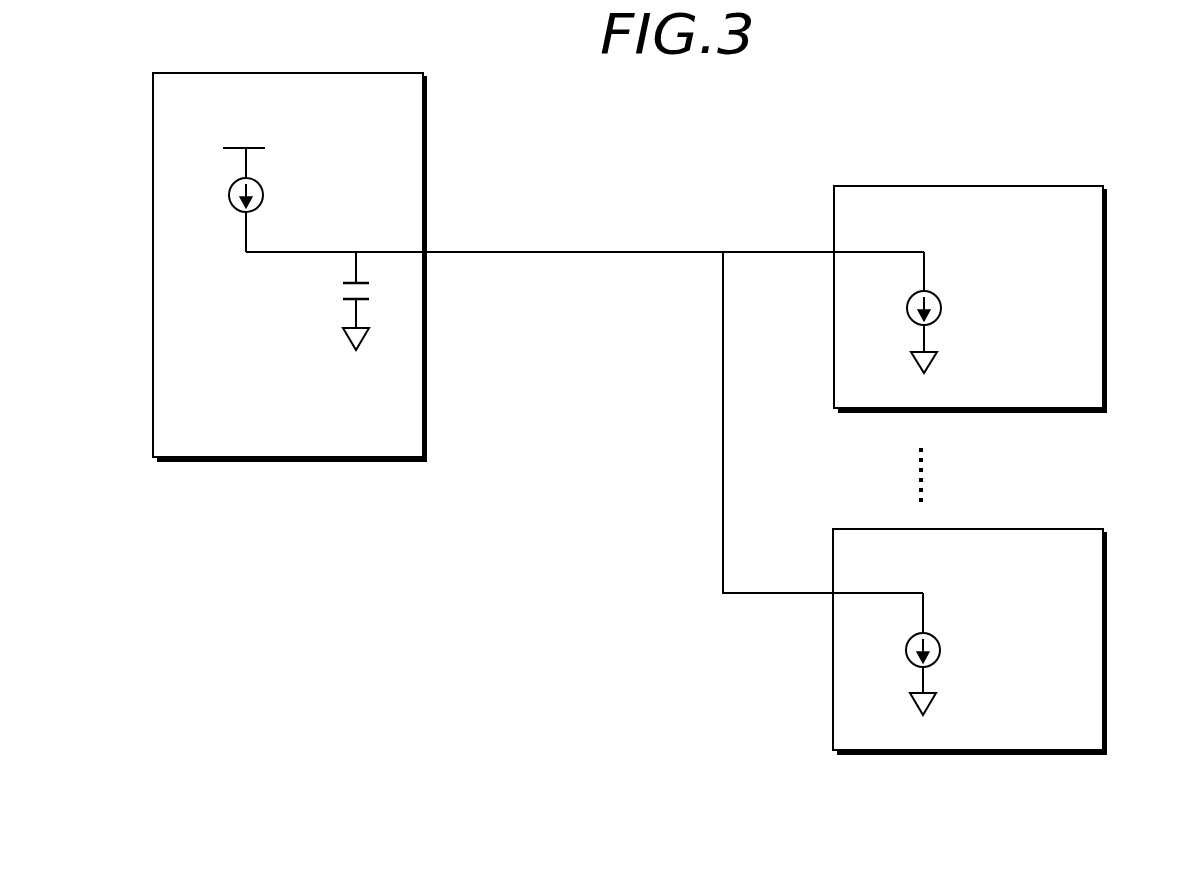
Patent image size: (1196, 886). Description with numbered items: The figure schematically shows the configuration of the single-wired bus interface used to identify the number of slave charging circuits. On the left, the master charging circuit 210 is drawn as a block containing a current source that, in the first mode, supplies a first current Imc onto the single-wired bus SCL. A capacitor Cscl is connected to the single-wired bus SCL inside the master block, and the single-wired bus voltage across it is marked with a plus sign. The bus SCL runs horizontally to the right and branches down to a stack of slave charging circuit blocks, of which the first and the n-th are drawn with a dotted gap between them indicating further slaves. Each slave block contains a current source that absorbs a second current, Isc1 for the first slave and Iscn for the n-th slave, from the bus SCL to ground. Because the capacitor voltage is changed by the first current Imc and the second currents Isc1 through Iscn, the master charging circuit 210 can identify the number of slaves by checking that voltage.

The master charging circuit 210 is at (331, 267).
The single-wired bus SCL is at (585, 403).
The first current Imc is at (283, 178).
The capacitor Cscl is at (354, 301).
The second current Isc1 is at (953, 287).
The second current Iscn is at (954, 635).